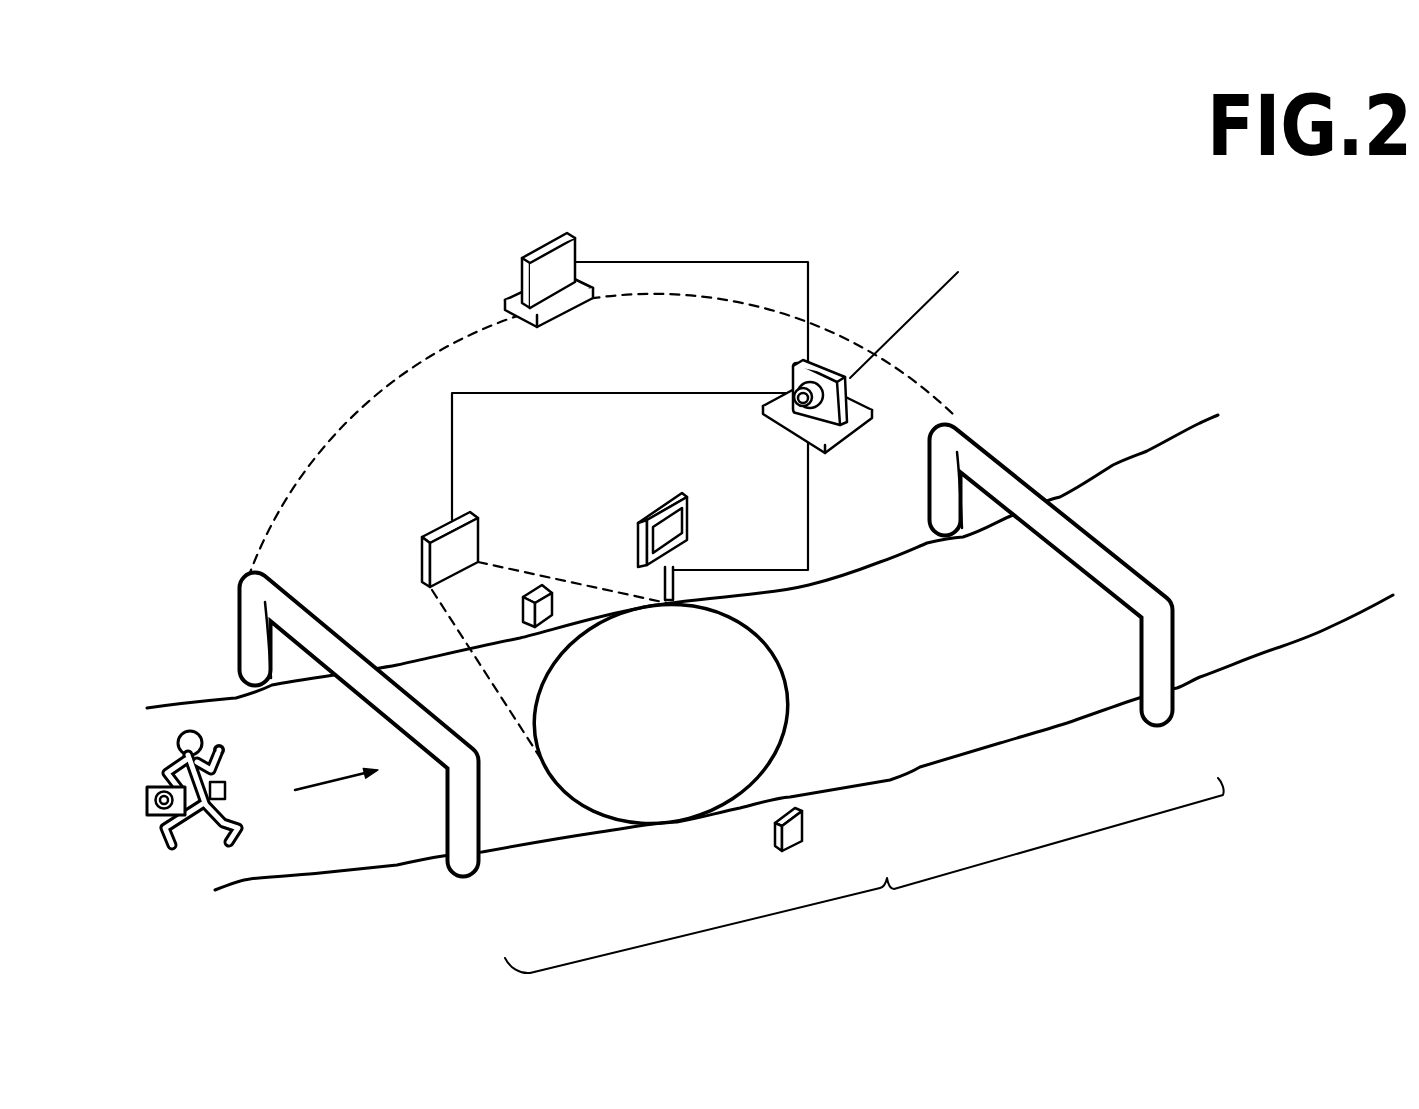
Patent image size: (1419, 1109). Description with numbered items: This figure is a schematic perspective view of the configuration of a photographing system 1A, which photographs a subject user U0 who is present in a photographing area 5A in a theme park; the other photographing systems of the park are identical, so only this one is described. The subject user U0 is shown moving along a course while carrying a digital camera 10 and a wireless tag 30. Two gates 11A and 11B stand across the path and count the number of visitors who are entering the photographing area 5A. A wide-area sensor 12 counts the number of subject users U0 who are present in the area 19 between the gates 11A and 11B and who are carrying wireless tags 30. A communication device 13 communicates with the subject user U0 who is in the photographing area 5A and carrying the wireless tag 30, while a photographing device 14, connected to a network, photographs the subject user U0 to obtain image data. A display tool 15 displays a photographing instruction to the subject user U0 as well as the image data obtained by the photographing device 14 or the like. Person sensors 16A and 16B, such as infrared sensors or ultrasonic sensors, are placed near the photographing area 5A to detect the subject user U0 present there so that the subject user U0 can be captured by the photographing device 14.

The photographing system 1A is at (728, 192).
The photographing area 5A is at (673, 803).
The digital camera 10 is at (147, 806).
The gate 11A is at (272, 592).
The gate 11B is at (1003, 477).
The wide-area sensor 12 is at (548, 238).
The communication device 13 is at (460, 517).
The photographing device 14 is at (839, 452).
The display tool 15 is at (695, 518).
The person sensor 16A is at (530, 590).
The person sensor 16B is at (788, 822).
The area 19 is at (864, 875).
The wireless tag 30 is at (226, 784).
The subject user U0 is at (190, 731).